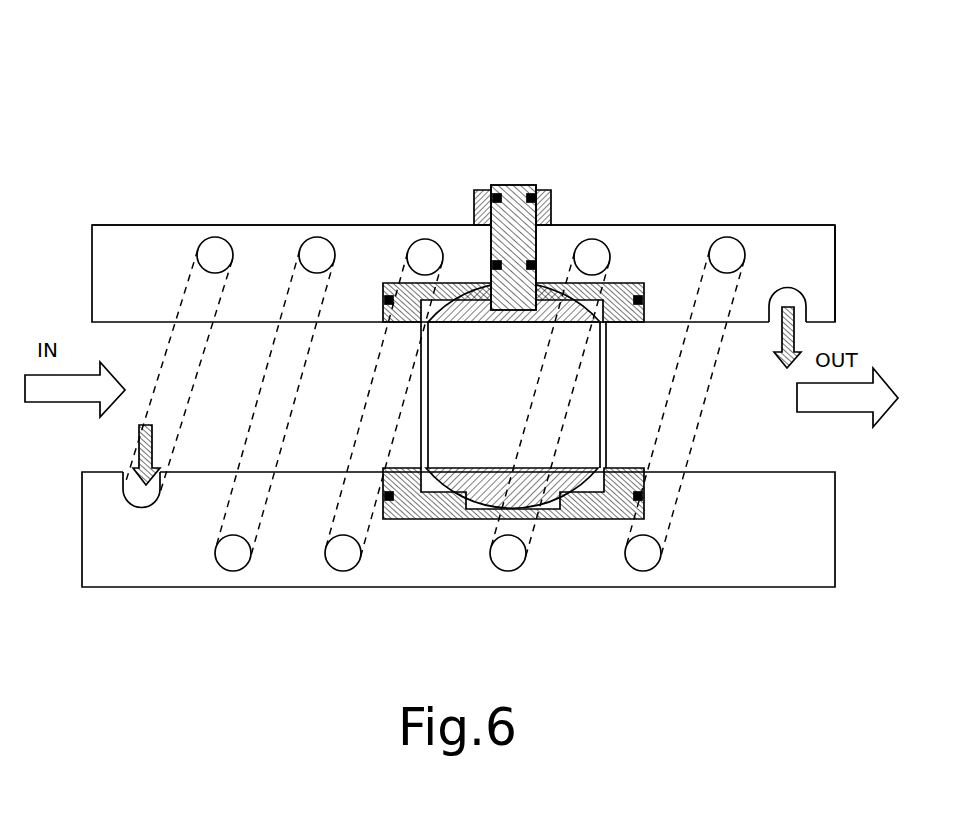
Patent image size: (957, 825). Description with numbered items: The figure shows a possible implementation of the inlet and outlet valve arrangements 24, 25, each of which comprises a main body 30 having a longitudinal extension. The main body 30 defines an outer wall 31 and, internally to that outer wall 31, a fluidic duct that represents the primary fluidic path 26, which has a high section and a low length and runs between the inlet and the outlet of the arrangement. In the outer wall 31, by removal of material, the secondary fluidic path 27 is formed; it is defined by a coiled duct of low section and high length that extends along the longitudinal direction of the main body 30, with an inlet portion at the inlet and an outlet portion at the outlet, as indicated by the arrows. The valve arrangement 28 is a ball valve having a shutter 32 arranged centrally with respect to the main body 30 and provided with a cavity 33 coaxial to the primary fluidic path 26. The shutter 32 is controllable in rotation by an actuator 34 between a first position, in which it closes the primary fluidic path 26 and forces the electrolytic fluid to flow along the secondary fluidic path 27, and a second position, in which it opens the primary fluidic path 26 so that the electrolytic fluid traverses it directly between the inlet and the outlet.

The inlet valve arrangement 24 is at (92, 200).
The outlet valve arrangement 25 is at (458, 529).
The primary fluidic path 26 is at (437, 330).
The secondary fluidic path 27 is at (272, 349).
The valve arrangement 28 is at (545, 300).
The main body 30 is at (352, 225).
The outer wall 31 is at (836, 229).
The shutter 32 is at (550, 503).
The cavity 33 is at (495, 462).
The actuator 34 is at (519, 186).